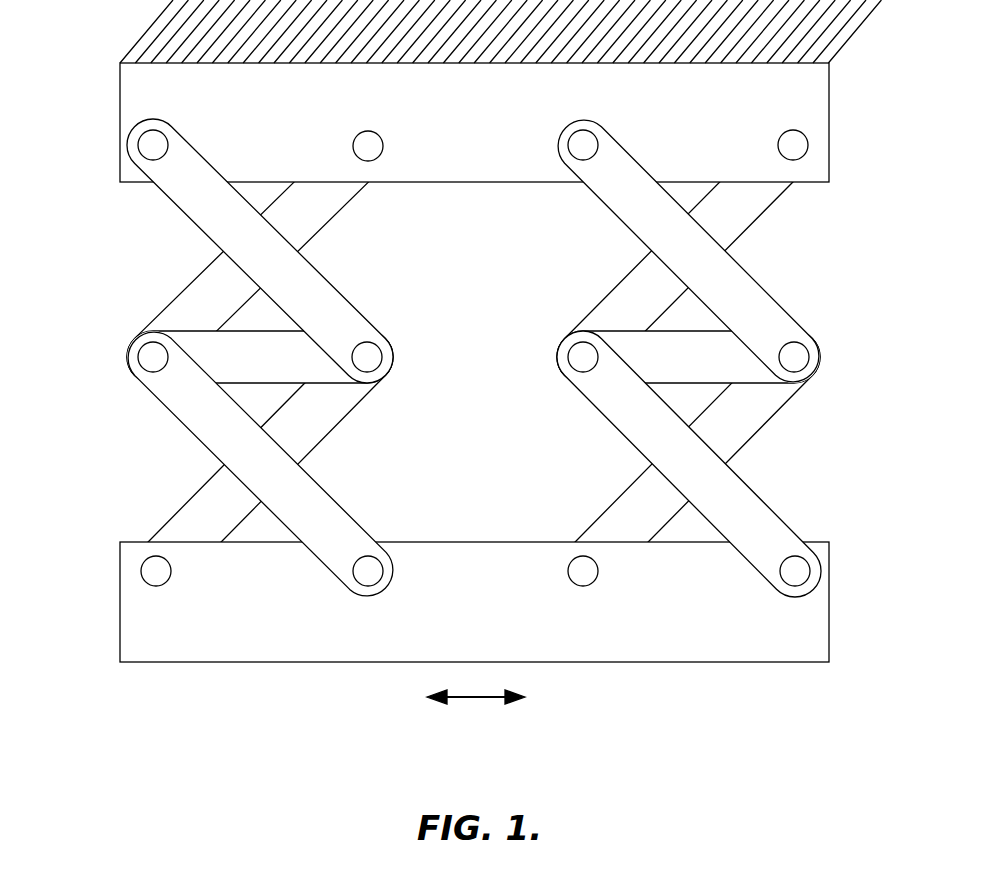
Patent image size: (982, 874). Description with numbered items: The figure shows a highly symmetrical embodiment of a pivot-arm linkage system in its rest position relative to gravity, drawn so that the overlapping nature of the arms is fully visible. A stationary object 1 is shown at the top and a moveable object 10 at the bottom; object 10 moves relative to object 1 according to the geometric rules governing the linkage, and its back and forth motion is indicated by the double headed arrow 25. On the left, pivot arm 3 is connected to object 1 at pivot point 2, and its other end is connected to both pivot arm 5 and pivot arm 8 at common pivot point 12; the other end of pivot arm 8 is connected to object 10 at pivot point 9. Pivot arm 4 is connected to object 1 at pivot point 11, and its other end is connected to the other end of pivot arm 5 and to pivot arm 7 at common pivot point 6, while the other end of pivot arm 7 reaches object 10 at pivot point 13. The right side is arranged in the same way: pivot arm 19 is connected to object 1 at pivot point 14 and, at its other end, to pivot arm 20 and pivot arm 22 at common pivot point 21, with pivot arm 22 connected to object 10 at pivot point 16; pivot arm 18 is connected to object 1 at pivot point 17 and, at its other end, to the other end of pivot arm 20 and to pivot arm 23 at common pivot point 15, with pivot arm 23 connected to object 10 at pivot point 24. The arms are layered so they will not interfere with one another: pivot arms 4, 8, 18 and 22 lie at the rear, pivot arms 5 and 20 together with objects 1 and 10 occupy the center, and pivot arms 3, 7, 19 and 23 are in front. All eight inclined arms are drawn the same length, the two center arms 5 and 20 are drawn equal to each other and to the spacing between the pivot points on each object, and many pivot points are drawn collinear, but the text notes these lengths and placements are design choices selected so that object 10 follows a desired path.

The stationary object 1 is at (130, 83).
The pivot point 2 is at (140, 140).
The pivot arm 3 is at (190, 203).
The pivot arm 4 is at (197, 297).
The pivot arm 5 is at (193, 343).
The common pivot point 6 is at (143, 362).
The pivot arm 7 is at (197, 410).
The pivot arm 8 is at (180, 509).
The pivot point 9 is at (140, 570).
The moveable object 10 is at (133, 633).
The pivot point 11 is at (373, 158).
The common pivot point 12 is at (378, 345).
The pivot point 13 is at (378, 558).
The pivot point 14 is at (571, 157).
The common pivot point 15 is at (570, 340).
The pivot point 16 is at (574, 558).
The pivot point 17 is at (808, 145).
The pivot arm 18 is at (755, 210).
The pivot arm 19 is at (750, 295).
The pivot arm 20 is at (728, 360).
The common pivot point 21 is at (805, 376).
The pivot arm 22 is at (755, 425).
The pivot arm 23 is at (768, 523).
The pivot point 24 is at (808, 568).
The double headed arrow 25 is at (476, 717).